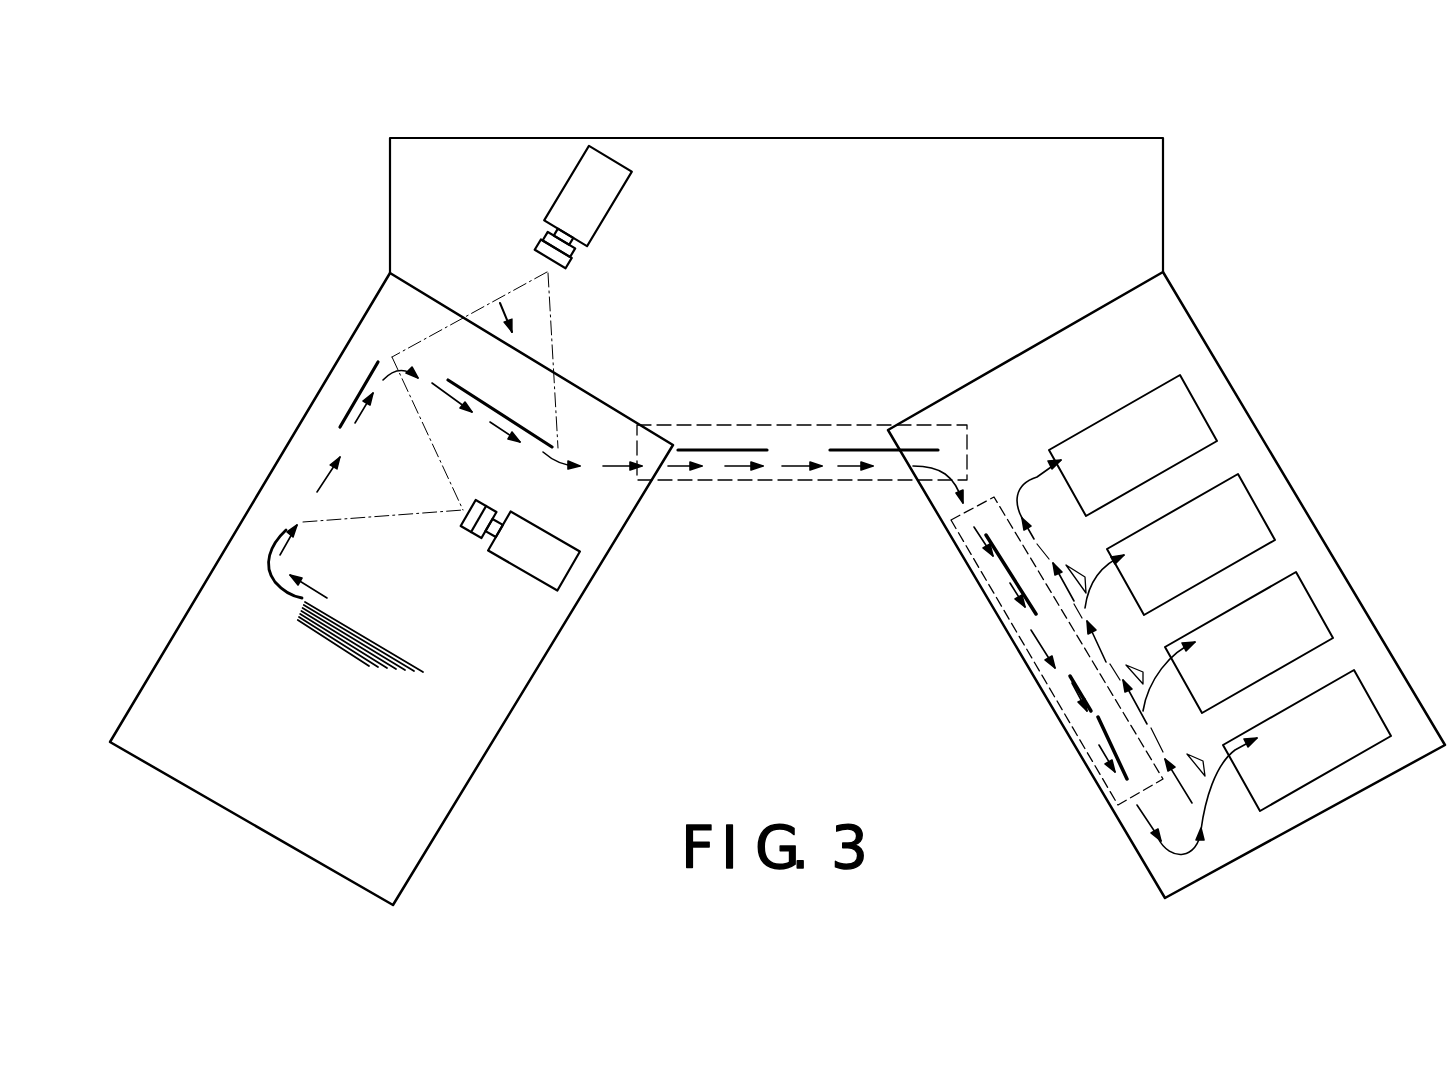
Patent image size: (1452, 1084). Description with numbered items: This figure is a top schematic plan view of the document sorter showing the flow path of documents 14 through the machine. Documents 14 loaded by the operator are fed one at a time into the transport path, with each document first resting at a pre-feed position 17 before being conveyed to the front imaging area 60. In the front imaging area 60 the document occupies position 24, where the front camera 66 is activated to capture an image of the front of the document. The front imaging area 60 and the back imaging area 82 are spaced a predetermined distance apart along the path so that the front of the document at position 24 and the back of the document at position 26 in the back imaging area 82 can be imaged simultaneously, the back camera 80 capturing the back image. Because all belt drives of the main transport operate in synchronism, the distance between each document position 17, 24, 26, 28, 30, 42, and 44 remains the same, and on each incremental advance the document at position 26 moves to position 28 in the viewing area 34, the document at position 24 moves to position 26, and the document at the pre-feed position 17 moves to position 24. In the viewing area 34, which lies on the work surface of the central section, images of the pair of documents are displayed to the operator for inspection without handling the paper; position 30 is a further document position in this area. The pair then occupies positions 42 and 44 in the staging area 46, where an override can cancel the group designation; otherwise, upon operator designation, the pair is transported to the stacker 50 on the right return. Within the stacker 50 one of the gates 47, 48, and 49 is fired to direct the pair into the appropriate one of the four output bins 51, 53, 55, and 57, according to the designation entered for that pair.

The documents 14 is at (407, 667).
The pre-feed position 17 is at (282, 585).
The document position in front imaging area 24 is at (362, 388).
The document position in back imaging area 26 is at (490, 403).
The document position in viewing area 28 is at (722, 452).
The document position 30 is at (885, 452).
The viewing area 34 is at (789, 453).
The document position in staging area 42 is at (1003, 561).
The document position in staging area 44 is at (1099, 726).
The staging area 46 is at (1044, 678).
The gate 47 is at (1190, 758).
The gate 48 is at (1138, 666).
The gate 49 is at (1074, 567).
The stacker 50 is at (1287, 534).
The output bin 51 is at (1356, 694).
The output bin 53 is at (1291, 596).
The output bin 55 is at (1234, 500).
The output bin 57 is at (1172, 390).
The front imaging area 60 is at (383, 470).
The front camera 66 is at (570, 558).
The back camera 80 is at (590, 167).
The back imaging area 82 is at (503, 312).